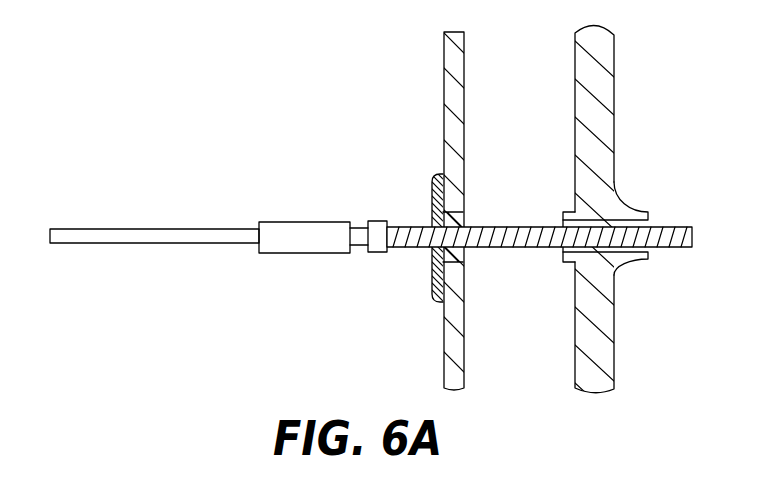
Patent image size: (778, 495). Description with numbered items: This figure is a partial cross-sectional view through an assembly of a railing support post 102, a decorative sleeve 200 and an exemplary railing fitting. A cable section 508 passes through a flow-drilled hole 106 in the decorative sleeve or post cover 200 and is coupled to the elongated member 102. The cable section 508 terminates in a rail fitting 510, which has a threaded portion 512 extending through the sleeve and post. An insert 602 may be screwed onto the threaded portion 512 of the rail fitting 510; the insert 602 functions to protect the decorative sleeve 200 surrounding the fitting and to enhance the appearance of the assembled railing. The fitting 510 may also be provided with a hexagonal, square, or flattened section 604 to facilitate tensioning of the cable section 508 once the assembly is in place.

The railing support post 102 is at (576, 88).
The flow-drilled hole 106 is at (560, 222).
The decorative sleeve 200 is at (445, 88).
The cable section 508 is at (156, 229).
The rail fitting 510 is at (322, 222).
The threaded portion 512 is at (691, 233).
The insert 602 is at (432, 200).
The flattened section 604 is at (363, 247).